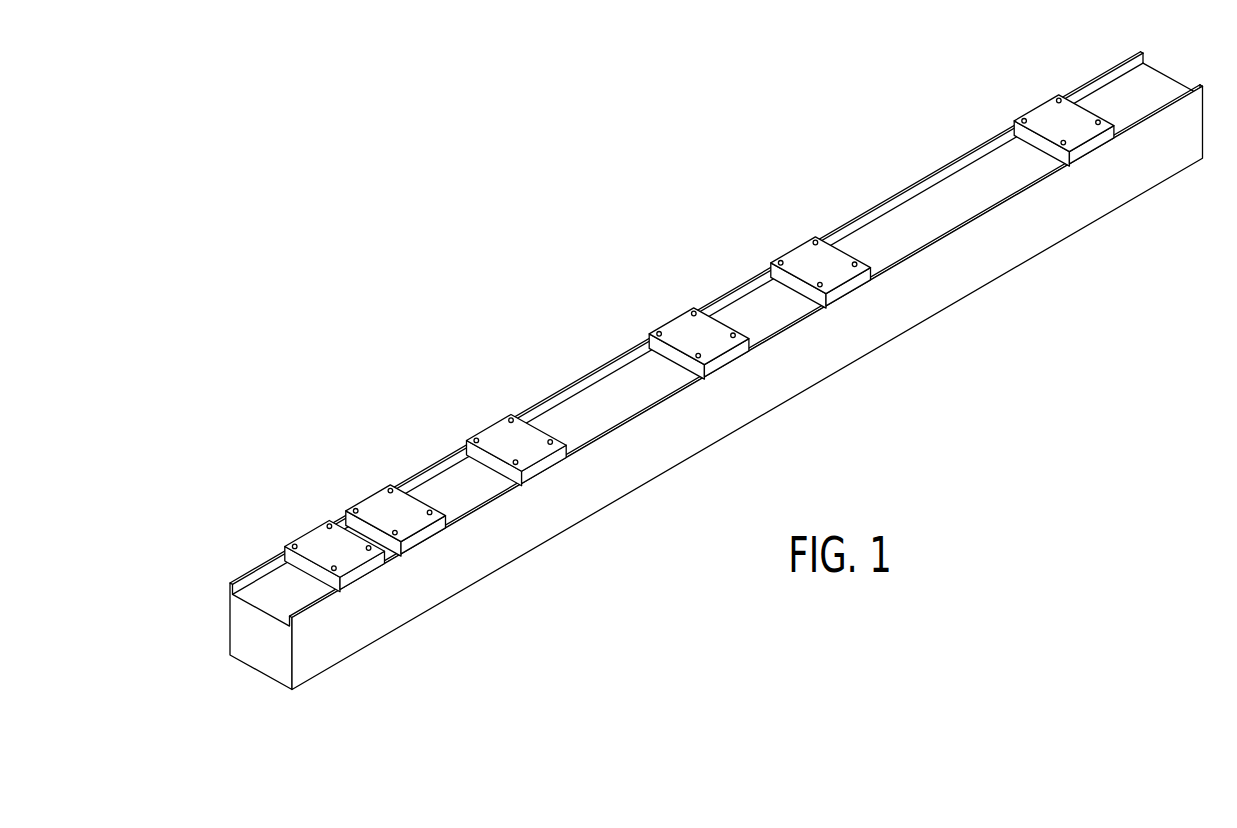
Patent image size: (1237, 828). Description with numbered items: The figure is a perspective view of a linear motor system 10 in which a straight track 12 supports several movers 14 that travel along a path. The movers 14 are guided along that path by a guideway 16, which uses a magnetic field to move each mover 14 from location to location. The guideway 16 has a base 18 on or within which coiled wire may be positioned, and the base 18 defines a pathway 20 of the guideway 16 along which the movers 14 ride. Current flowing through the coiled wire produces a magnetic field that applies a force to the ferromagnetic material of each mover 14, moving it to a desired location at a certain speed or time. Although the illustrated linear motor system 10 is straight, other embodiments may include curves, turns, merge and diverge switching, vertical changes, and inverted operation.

The linear motor system 10 is at (303, 328).
The track 12 is at (455, 562).
The mover 14 is at (697, 330).
The guideway 16 is at (938, 212).
The base 18 is at (997, 175).
The pathway 20 is at (937, 187).